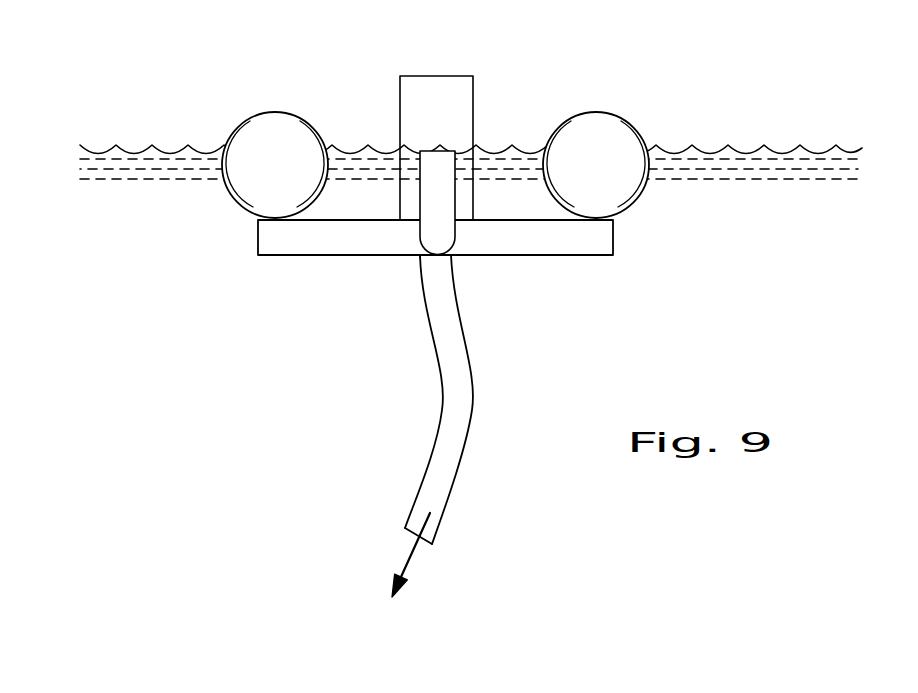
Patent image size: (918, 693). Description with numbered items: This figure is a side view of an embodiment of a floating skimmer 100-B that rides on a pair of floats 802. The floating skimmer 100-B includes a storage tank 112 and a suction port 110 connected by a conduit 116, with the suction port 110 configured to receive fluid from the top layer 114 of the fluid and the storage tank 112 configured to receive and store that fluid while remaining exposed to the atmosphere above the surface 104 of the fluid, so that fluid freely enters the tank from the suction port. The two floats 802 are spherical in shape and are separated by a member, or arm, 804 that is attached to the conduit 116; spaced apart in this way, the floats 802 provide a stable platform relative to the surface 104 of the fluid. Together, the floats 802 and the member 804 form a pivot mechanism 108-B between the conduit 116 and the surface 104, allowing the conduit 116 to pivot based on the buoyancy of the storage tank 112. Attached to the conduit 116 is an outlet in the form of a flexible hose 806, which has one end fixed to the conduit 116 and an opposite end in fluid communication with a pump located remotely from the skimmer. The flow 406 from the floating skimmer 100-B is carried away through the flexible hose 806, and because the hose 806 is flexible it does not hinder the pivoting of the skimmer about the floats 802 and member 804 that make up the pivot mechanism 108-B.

The floating skimmer 100-B is at (214, 326).
The surface of the fluid 104 is at (703, 148).
The pivot mechanism 108-B is at (167, 220).
The suction port 110 is at (431, 151).
The storage tank 112 is at (473, 92).
The top layer of the fluid 114 is at (790, 155).
The conduit 116 is at (420, 256).
The flow 406 is at (410, 553).
The floats 802 is at (232, 133).
The member 804 is at (566, 256).
The flexible hose 806 is at (440, 402).